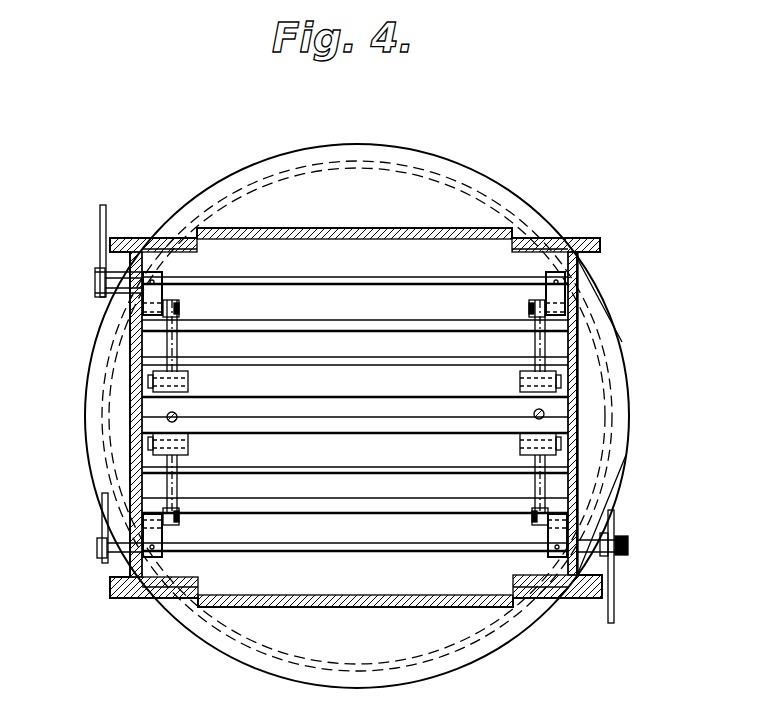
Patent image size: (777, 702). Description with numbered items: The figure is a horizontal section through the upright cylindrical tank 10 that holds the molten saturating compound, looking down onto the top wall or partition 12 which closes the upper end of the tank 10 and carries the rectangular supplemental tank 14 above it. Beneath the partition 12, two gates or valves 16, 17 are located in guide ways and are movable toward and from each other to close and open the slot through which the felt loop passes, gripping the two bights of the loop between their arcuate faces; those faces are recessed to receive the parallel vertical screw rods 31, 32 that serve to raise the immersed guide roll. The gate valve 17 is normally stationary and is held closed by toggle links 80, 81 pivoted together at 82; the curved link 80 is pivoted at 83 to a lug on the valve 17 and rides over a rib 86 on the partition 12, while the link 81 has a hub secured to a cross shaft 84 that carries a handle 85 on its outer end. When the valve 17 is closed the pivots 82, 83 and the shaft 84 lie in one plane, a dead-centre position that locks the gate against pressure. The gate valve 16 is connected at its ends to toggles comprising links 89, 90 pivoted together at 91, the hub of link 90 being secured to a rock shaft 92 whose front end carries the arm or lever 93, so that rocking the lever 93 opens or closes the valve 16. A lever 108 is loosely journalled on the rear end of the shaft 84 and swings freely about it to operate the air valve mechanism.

The cylindrical tank 10 is at (612, 418).
The top wall 12 is at (415, 190).
The supplemental tank 14 is at (566, 297).
The gate valve 16 is at (400, 408).
The gate valve 17 is at (455, 434).
The screw rod 31 is at (535, 411).
The screw rod 32 is at (177, 414).
The toggle link 80 is at (178, 491).
The toggle link 81 is at (181, 531).
The pivot 82 is at (182, 522).
The pivot 83 is at (189, 446).
The cross shaft 84 is at (470, 553).
The handle 85 is at (102, 520).
The rib 86 is at (318, 322).
The toggle link 89 is at (178, 348).
The toggle link 90 is at (163, 290).
The pivot 91 is at (180, 312).
The rock shaft 92 is at (300, 285).
The lever 93 is at (100, 237).
The lever 108 is at (611, 612).